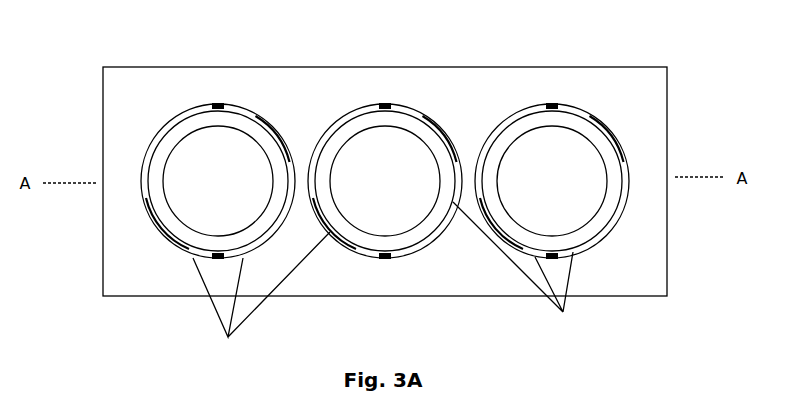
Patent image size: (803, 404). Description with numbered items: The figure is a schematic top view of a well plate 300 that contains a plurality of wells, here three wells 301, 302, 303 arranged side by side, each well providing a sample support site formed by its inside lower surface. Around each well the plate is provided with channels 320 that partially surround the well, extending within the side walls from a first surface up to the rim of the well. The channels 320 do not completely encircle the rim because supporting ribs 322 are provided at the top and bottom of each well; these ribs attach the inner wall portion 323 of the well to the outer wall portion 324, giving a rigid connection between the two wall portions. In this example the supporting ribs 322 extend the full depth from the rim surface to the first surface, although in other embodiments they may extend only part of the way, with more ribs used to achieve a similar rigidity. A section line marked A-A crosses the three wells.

The well plate 300 is at (120, 275).
The well 301 is at (233, 150).
The well 302 is at (401, 145).
The well 303 is at (577, 143).
The channels 320 is at (387, 281).
The supporting ribs 322 is at (386, 105).
The inner wall portion 323 is at (437, 238).
The outer wall portion 324 is at (415, 253).